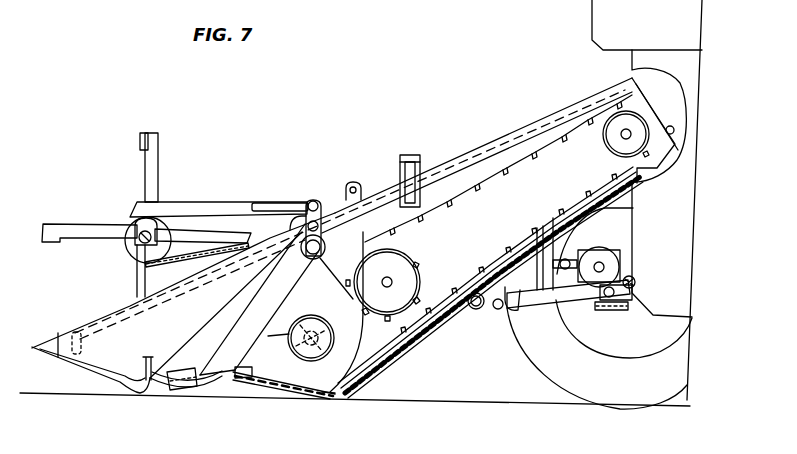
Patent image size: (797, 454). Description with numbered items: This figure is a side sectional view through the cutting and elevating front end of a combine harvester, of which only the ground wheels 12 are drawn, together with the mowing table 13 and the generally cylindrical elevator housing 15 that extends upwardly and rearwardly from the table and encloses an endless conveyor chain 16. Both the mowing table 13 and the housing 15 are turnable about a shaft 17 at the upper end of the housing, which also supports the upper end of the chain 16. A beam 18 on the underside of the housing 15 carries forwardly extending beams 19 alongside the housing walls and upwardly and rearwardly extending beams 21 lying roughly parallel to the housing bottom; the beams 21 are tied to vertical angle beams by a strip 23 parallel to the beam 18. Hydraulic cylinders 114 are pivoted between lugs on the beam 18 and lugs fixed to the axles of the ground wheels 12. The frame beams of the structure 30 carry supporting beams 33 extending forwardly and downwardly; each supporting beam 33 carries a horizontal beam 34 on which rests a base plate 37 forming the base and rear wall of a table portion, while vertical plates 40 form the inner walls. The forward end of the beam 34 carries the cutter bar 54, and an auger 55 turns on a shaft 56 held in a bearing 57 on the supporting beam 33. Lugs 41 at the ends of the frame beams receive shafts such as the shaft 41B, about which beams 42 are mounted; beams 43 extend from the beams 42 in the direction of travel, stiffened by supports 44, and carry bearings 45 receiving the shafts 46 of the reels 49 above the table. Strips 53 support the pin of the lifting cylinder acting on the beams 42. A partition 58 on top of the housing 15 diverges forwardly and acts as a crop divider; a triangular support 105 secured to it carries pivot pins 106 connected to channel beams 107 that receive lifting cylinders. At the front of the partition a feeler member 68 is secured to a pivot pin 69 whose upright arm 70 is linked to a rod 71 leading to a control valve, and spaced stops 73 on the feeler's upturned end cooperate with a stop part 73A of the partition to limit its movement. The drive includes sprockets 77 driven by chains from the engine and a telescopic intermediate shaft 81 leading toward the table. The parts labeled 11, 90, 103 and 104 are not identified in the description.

The tractor body 11 is at (590, 27).
The ground wheels 12 is at (556, 378).
The mowing table 13 is at (351, 389).
The elevator housing 15 is at (400, 343).
The endless conveyor chain 16 is at (484, 247).
The shaft 17 is at (607, 140).
The beam 18 is at (476, 312).
The beams 19 is at (456, 306).
The beams 21 is at (512, 311).
The strip 23 is at (561, 293).
The frame beams 30 is at (326, 278).
The supporting beams 33 is at (266, 293).
The horizontal beam 34 is at (238, 370).
The base plate 37 is at (337, 399).
The vertical plates 40 is at (306, 392).
The lugs 41 is at (321, 256).
The shaft 41B is at (323, 240).
The beams 42 is at (313, 200).
The beams 43 is at (215, 200).
The supports 44 is at (280, 203).
The bearings 45 is at (125, 250).
The shafts 46 is at (130, 225).
The reels 49 is at (165, 152).
The strips 53 is at (363, 190).
The cutter bar 54 is at (192, 392).
The auger 55 is at (329, 330).
The shaft 56 is at (334, 338).
The bearing 57 is at (326, 349).
The partition 58 is at (533, 123).
The feeler member 68 is at (85, 370).
The pivot pin 69 is at (62, 360).
The upright arm 70 is at (84, 349).
The rod 71 is at (86, 326).
The stops 73 is at (120, 388).
The stop part 73A is at (143, 368).
The sprockets 77 is at (621, 257).
The telescopic intermediate shaft 81 is at (582, 279).
The bracket 90 is at (328, 203).
The support rod 103 is at (180, 252).
The bar 104 is at (168, 235).
The triangular support 105 is at (425, 172).
The pivot pins 106 is at (405, 160).
The channel beam 107 is at (420, 153).
The hydraulic cylinders 114 is at (553, 316).